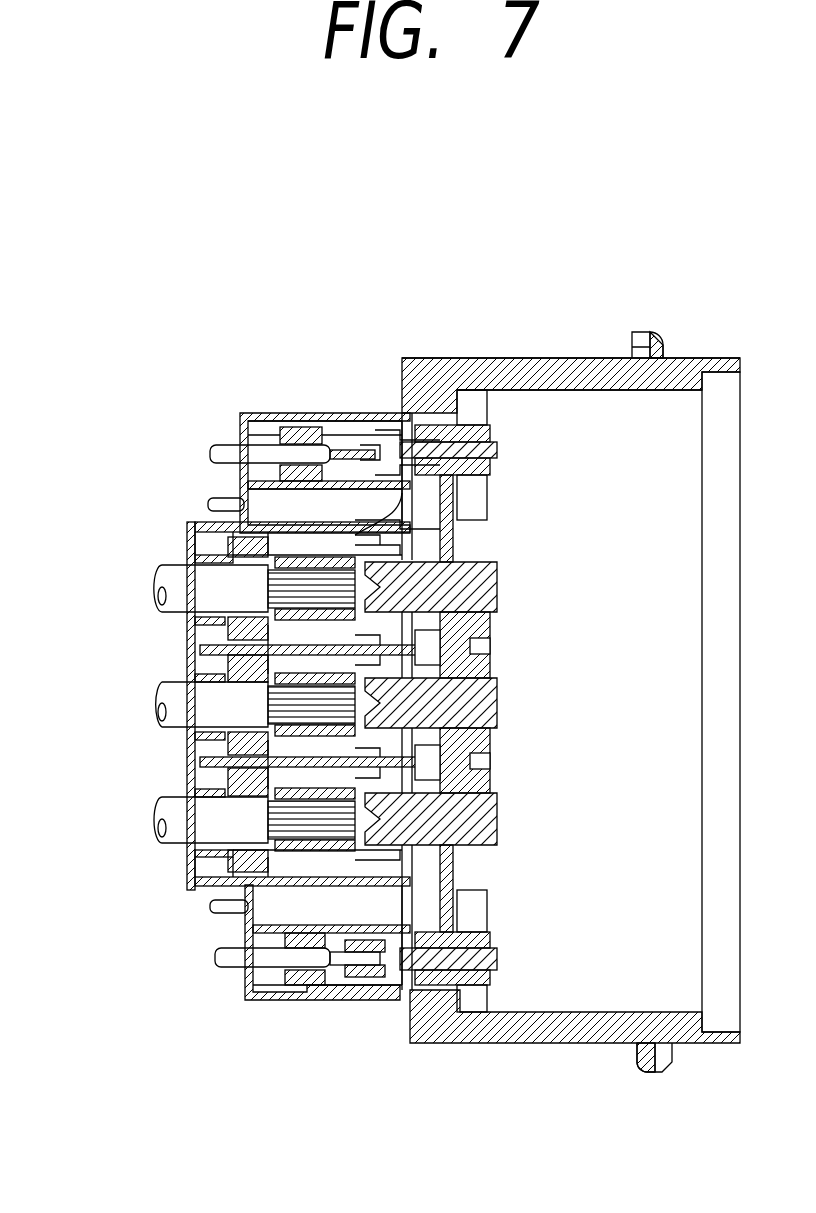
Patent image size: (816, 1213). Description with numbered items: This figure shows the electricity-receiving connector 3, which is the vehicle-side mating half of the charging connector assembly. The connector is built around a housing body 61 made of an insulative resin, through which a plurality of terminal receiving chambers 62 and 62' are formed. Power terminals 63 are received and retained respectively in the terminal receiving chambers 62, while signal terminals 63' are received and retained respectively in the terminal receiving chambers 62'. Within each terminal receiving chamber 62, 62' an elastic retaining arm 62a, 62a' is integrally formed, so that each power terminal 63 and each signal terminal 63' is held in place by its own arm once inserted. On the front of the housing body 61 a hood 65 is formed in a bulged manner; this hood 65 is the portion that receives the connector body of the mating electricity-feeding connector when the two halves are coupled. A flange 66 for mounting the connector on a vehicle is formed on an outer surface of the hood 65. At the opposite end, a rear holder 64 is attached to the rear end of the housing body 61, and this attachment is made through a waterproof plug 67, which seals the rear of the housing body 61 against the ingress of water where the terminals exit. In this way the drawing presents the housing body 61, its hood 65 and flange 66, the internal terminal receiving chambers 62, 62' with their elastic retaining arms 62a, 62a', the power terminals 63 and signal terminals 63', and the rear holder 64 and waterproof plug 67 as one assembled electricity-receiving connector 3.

The electricity-receiving connector 3 is at (464, 342).
The housing body 61 is at (519, 358).
The hood 65 is at (598, 362).
The flange 66 is at (660, 333).
The waterproof plug 67 is at (302, 405).
The elastic retaining arm 62a' is at (396, 344).
The terminal receiving chamber 62' is at (325, 419).
The rear holder 64 is at (184, 543).
The elastic retaining arm 62a is at (483, 508).
The terminal receiving chamber 62 is at (241, 706).
The power terminal 63 is at (501, 701).
The signal terminal 63' is at (515, 705).